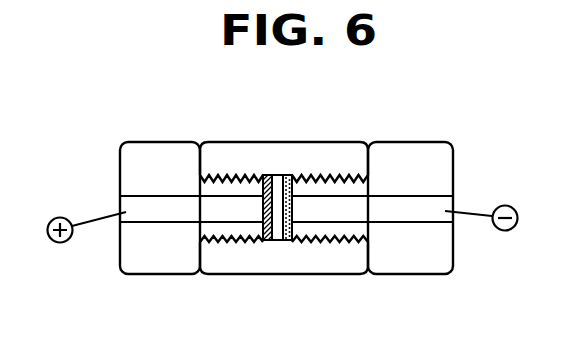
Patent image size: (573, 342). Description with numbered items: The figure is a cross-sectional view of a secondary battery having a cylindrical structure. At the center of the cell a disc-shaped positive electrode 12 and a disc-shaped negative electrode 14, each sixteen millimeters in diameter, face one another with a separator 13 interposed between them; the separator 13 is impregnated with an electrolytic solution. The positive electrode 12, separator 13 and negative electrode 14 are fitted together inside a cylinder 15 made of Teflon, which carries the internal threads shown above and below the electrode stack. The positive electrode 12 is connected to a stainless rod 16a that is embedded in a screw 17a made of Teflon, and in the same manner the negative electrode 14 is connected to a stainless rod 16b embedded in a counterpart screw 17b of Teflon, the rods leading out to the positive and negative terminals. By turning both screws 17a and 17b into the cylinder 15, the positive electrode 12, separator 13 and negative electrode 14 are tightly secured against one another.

The positive electrode 12 is at (268, 242).
The separator 13 is at (278, 242).
The negative electrode 14 is at (287, 242).
The cylinder 15 is at (284, 157).
The stainless rod 16a is at (126, 205).
The stainless rod 16b is at (445, 203).
The screw 17a is at (153, 157).
The counterpart screw 17b is at (403, 157).